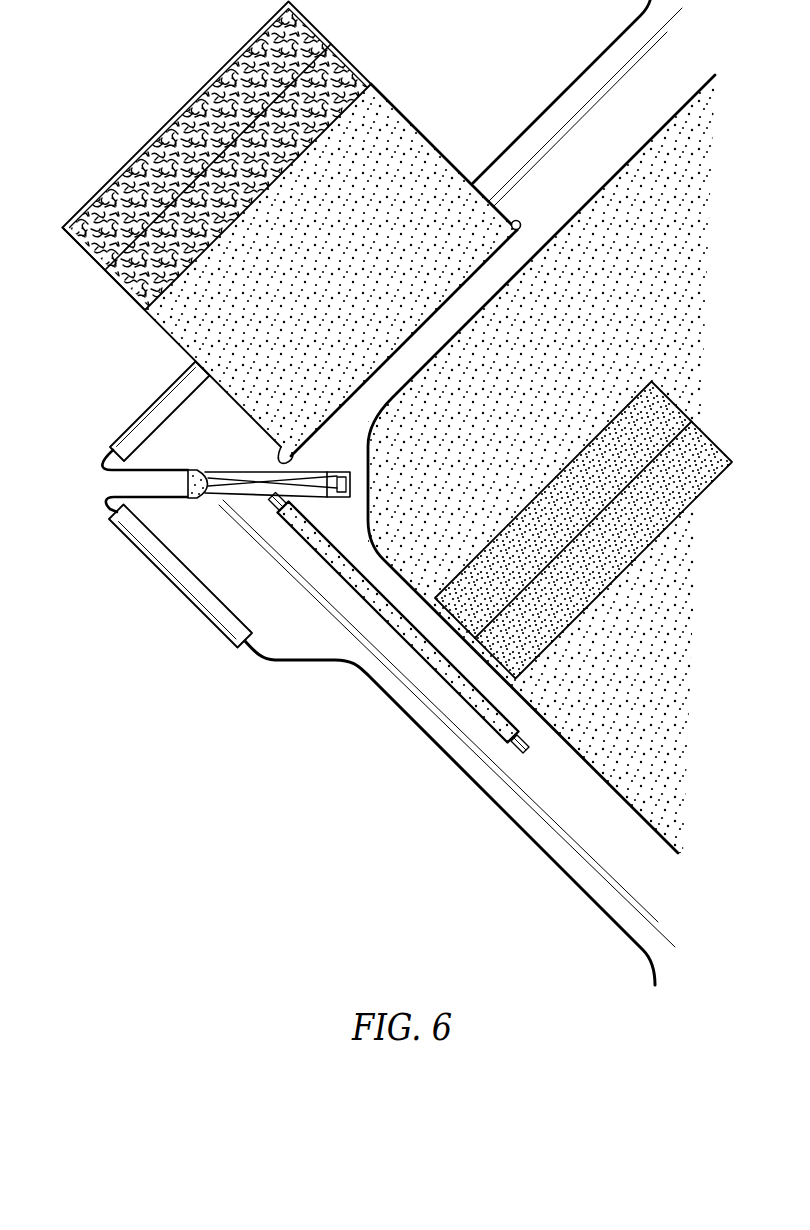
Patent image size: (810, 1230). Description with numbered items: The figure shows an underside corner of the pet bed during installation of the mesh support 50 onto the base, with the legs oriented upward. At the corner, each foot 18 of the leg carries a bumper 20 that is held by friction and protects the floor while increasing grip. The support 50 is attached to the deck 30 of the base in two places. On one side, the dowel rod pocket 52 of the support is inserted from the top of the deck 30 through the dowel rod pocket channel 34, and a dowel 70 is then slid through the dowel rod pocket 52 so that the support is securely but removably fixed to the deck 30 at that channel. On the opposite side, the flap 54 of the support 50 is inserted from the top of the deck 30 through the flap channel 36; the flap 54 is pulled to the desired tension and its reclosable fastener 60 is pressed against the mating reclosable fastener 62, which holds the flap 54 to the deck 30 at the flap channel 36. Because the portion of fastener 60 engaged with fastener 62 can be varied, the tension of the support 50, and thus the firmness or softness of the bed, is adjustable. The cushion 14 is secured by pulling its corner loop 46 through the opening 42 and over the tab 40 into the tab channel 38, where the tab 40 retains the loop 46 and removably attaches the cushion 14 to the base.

The cushion 14 is at (196, 498).
The foot 18 is at (308, 650).
The bumper 20 is at (162, 403).
The deck 30 is at (610, 158).
The dowel rod pocket channel 34 is at (355, 593).
The flap channel 36 is at (520, 222).
The tab channel 38 is at (349, 490).
The tab 40 is at (345, 481).
The opening 42 is at (127, 481).
The loop 46 is at (223, 480).
The support 50 is at (548, 421).
The dowel rod pocket 52 is at (423, 648).
The flap 54 is at (405, 163).
The reclosable fastener 60 is at (84, 247).
The reclosable fastener 62 is at (690, 487).
The dowel 70 is at (517, 746).